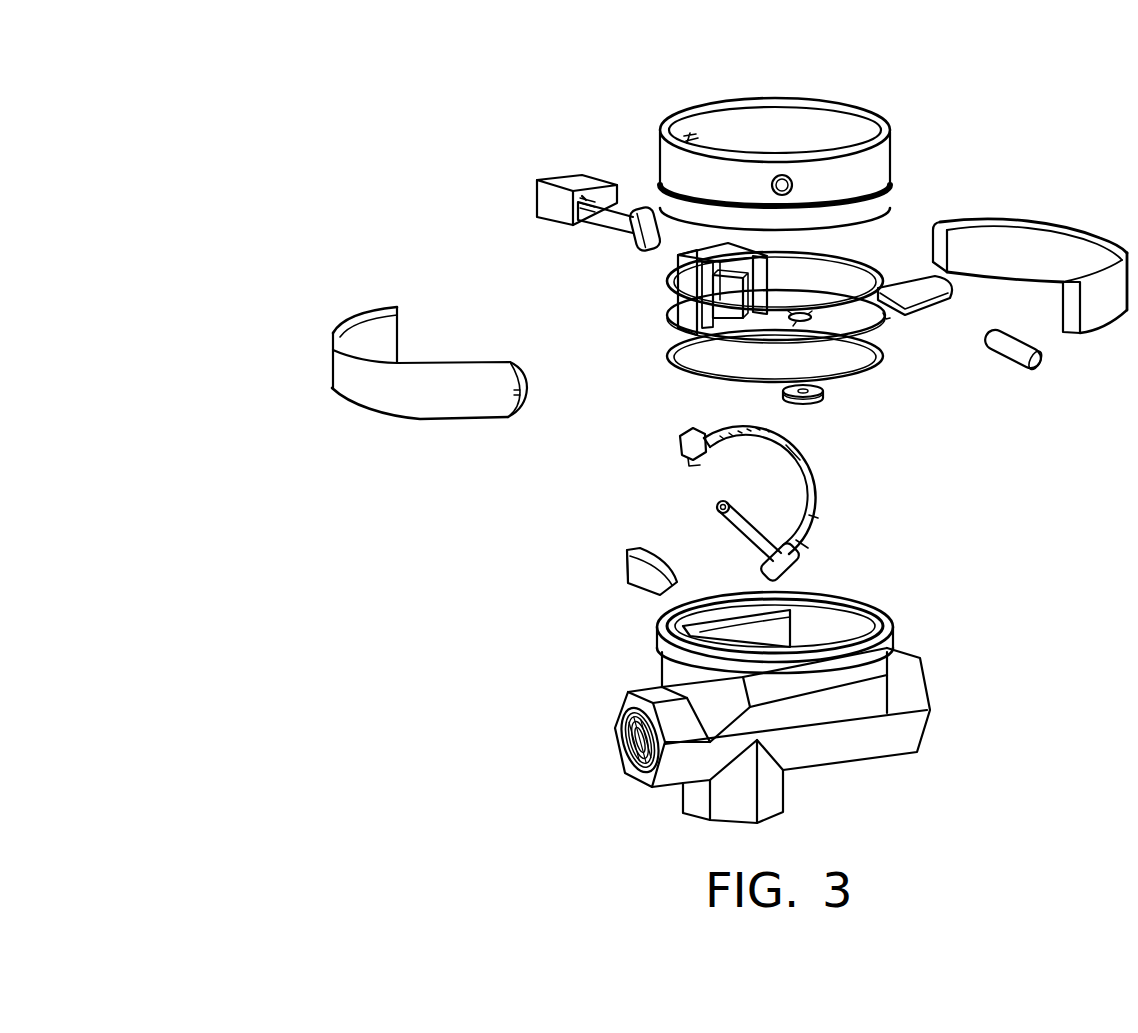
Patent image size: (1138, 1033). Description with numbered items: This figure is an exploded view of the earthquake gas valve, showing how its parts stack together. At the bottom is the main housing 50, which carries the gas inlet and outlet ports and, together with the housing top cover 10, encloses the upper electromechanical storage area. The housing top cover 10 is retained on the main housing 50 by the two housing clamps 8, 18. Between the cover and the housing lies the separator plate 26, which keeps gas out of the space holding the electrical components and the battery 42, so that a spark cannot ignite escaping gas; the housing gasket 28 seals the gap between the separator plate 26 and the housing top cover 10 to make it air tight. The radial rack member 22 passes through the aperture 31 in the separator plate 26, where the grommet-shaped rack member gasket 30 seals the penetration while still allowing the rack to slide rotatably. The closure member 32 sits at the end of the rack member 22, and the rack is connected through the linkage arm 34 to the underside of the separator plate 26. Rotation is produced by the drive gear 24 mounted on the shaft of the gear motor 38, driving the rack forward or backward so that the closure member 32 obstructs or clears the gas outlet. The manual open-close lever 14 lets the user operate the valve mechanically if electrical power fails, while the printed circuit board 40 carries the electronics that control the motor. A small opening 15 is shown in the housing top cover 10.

The housing clamp 8 is at (1030, 243).
The housing top cover 10 is at (877, 167).
The mechanical shutoff lever arm 14 is at (627, 248).
The hole 15 is at (788, 180).
The housing clamp 18 is at (336, 355).
The radial rack member 22 is at (810, 498).
The drive gear 24 is at (586, 200).
The separator plate 26 is at (723, 330).
The housing gasket 28 is at (872, 262).
The rack member gasket 30 is at (823, 400).
The aperture 31 is at (800, 319).
The closure member 32 is at (620, 571).
The linkage arm 34 is at (740, 522).
The gear motor 38 is at (566, 180).
The printed circuit board 40 is at (927, 296).
The battery 42 is at (1037, 370).
The main housing 50 is at (963, 610).